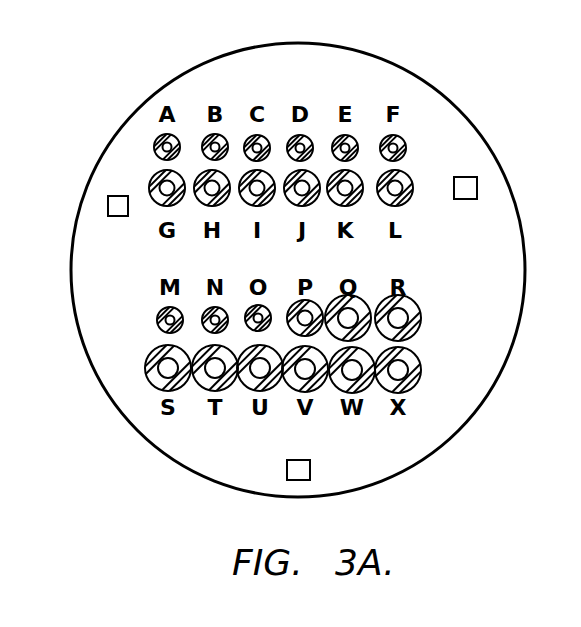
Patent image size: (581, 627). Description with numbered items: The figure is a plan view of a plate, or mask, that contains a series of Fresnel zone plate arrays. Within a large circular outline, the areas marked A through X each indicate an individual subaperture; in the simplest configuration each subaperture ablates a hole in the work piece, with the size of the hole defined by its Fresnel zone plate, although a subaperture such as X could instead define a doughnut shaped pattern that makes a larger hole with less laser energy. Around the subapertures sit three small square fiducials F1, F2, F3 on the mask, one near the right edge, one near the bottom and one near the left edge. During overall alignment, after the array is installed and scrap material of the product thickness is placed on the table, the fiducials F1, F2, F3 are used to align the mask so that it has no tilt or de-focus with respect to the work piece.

The fiducial F1 is at (466, 189).
The fiducial F2 is at (300, 470).
The fiducial F3 is at (108, 206).